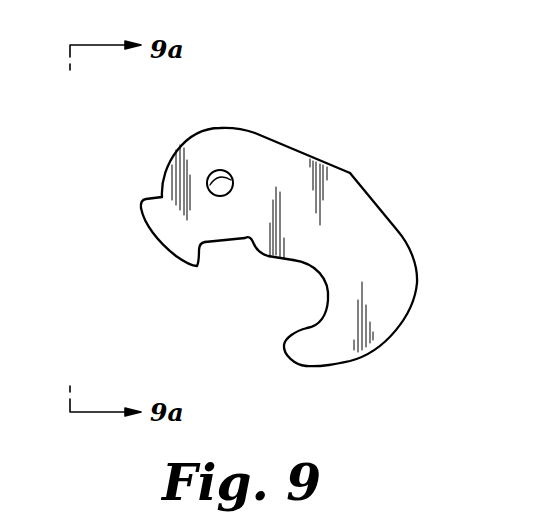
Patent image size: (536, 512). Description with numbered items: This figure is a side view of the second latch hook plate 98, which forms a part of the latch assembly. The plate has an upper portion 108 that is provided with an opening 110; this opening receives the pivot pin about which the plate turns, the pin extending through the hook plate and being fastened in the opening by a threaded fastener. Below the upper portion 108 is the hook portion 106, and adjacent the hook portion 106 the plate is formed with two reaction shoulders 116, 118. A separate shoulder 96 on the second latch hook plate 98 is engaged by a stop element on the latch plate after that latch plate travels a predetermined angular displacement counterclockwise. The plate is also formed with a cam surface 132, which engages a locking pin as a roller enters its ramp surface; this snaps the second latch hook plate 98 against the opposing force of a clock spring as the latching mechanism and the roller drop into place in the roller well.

The shoulder 96 is at (159, 197).
The second latch hook plate 98 is at (345, 208).
The hook portion 106 is at (305, 328).
The upper portion 108 is at (247, 133).
The opening 110 is at (210, 182).
The reaction shoulder 116 is at (250, 243).
The reaction shoulder 118 is at (211, 257).
The cam surface 132 is at (291, 360).